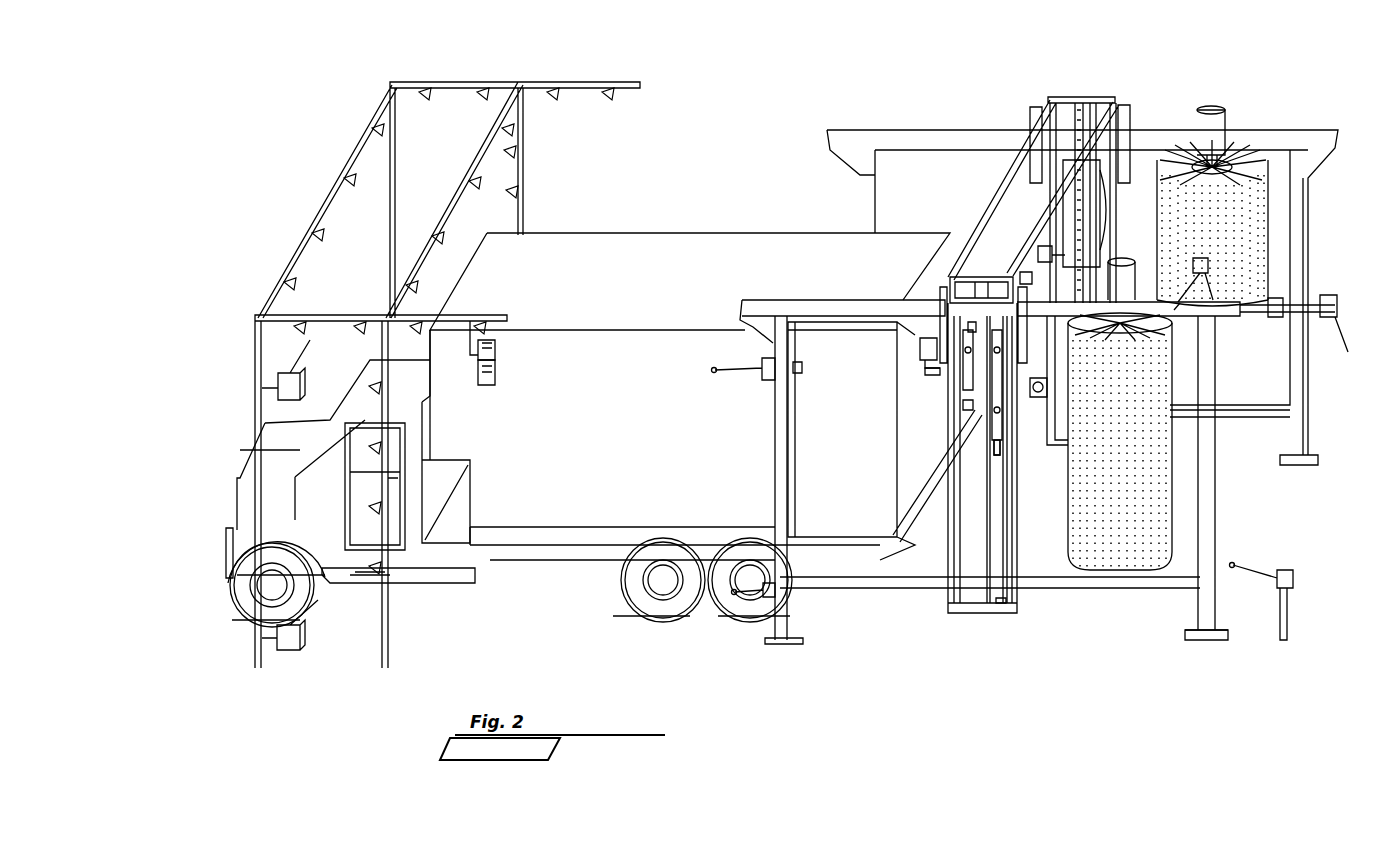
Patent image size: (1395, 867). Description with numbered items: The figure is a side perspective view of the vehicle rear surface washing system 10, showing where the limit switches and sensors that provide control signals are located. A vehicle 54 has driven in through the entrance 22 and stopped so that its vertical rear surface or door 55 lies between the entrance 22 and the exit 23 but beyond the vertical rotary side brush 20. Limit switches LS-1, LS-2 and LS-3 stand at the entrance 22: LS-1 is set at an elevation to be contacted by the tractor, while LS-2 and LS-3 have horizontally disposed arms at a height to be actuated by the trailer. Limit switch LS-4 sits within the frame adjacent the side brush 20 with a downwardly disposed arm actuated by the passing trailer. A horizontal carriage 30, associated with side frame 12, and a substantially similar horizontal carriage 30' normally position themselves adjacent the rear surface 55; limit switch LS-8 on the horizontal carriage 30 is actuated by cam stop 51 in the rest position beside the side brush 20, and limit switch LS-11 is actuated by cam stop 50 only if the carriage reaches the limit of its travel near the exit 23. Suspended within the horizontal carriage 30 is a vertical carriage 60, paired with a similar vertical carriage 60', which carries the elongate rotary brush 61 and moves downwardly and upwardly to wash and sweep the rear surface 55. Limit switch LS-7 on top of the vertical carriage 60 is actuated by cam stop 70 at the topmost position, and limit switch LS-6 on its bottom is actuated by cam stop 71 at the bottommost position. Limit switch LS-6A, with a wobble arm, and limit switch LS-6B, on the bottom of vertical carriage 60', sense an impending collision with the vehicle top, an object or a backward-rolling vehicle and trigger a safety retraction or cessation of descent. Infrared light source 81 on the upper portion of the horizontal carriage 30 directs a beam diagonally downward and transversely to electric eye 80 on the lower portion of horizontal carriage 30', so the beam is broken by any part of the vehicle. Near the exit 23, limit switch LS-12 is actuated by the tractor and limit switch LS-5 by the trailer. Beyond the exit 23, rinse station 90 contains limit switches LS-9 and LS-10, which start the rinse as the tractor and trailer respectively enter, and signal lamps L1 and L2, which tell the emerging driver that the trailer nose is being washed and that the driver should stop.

The vehicle rear surface washing system 10 is at (1308, 108).
The side frame 12 is at (835, 298).
The vertical rotary side brush 20 is at (1105, 570).
The entrance 22 is at (1316, 493).
The exit 23 is at (724, 435).
The horizontal carriage 30 is at (1057, 452).
The horizontal carriage 30' is at (1039, 184).
The cam stop 50 is at (802, 368).
The cam stop 51 is at (1076, 330).
The vehicle 54 is at (676, 240).
The vertical rear surface or door 55 is at (900, 548).
The vertical carriage 60 is at (965, 450).
The vertical carriage 60' is at (1127, 177).
The rotary brush 61 is at (1100, 232).
The cam stop 70 is at (953, 286).
The cam stop 71 is at (1000, 605).
The electric eye 80 is at (1038, 400).
The infrared light source 81 is at (920, 348).
The rinse station 90 is at (458, 318).
The signal lamp L1 is at (500, 352).
The signal lamp L2 is at (498, 375).
The limit switch LS-1 is at (1295, 580).
The limit switch LS-2 is at (1330, 295).
The limit switch LS-3 is at (1280, 300).
The limit switch LS-4 is at (1206, 262).
The limit switch LS-5 is at (762, 363).
The limit switch LS-6 is at (1003, 440).
The limit switch LS-6A is at (975, 412).
The limit switch LS-6B is at (1038, 246).
The limit switch LS-7 is at (972, 325).
The limit switch LS-8 is at (1018, 272).
The limit switch LS-9 is at (290, 652).
The limit switch LS-10 is at (330, 375).
The limit switch LS-11 is at (930, 370).
The limit switch LS-12 is at (768, 600).